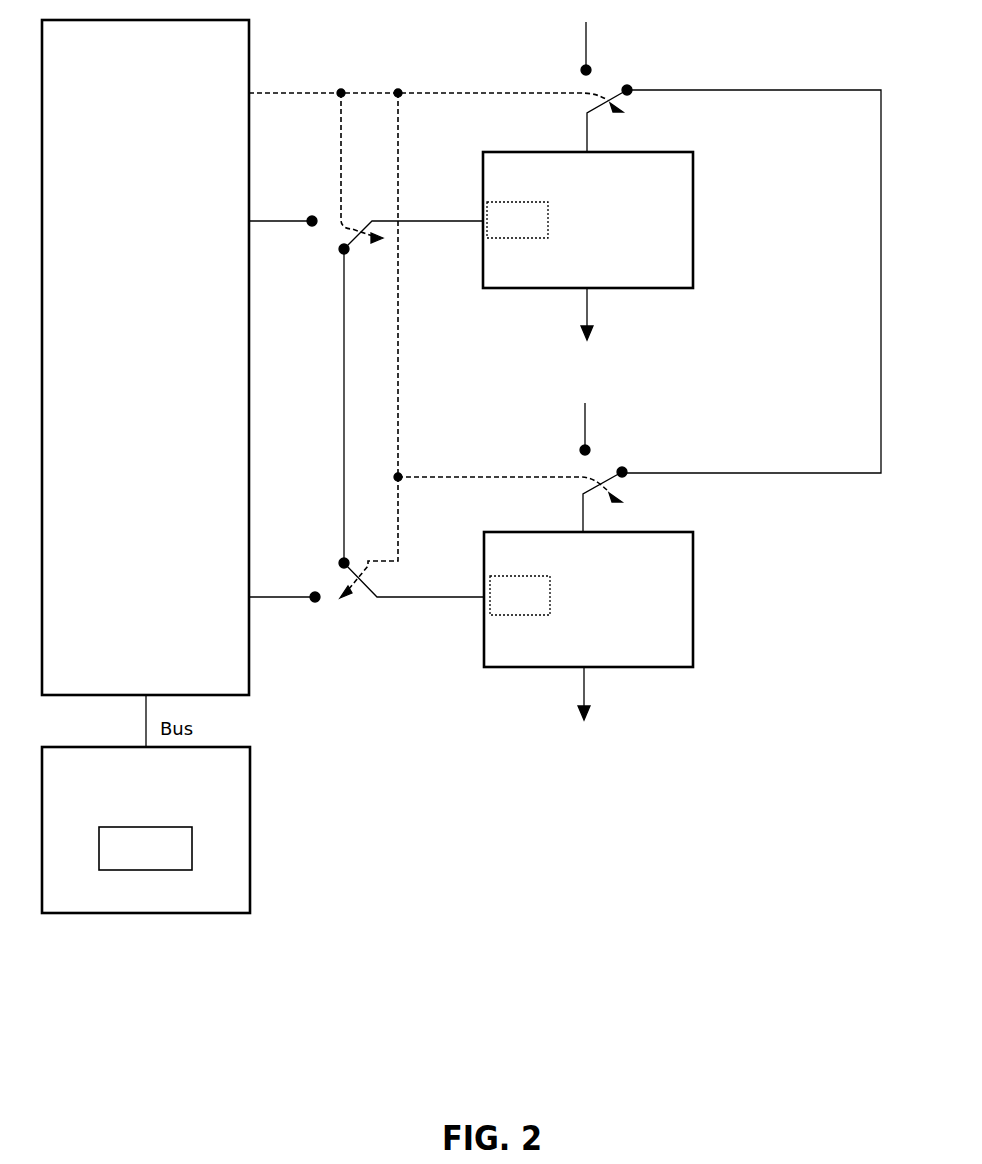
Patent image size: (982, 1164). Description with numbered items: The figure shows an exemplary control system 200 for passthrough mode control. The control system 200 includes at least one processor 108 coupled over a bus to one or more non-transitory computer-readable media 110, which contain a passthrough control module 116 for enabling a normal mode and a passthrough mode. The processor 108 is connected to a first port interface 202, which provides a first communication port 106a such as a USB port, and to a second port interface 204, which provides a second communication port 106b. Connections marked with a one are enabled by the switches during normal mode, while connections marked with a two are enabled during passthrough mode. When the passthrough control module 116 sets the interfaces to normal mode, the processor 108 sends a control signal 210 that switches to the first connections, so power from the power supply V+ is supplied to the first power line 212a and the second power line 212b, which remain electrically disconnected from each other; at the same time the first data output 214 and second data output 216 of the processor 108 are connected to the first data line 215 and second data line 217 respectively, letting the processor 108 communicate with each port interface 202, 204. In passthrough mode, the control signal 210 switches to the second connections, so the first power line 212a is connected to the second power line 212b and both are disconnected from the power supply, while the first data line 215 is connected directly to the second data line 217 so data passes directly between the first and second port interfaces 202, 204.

The processor 108 is at (145, 357).
The non-transitory computer-readable media 110 is at (146, 830).
The passthrough control module 116 is at (145, 848).
The control signal 210 is at (298, 93).
The first power line 212a is at (588, 135).
The second power line 212b is at (585, 515).
The first data output 214 is at (255, 220).
The first data line 215 is at (434, 222).
The second data output 216 is at (252, 596).
The second data line 217 is at (385, 600).
The first port interface 202 is at (588, 247).
The second port interface 204 is at (588, 627).
The first communication port 106a is at (517, 220).
The second communication port 106b is at (520, 595).
The control system 200 is at (483, 976).